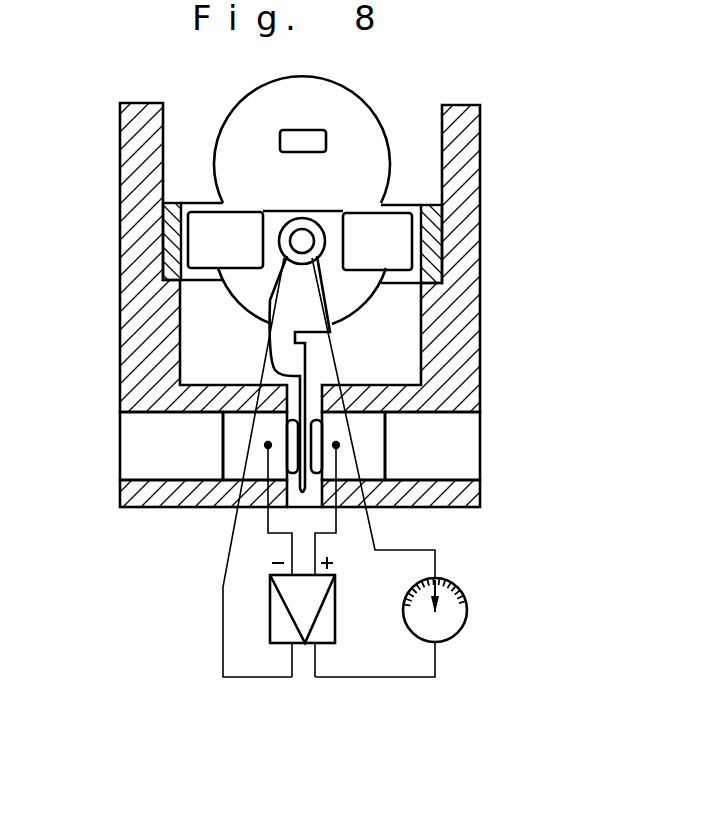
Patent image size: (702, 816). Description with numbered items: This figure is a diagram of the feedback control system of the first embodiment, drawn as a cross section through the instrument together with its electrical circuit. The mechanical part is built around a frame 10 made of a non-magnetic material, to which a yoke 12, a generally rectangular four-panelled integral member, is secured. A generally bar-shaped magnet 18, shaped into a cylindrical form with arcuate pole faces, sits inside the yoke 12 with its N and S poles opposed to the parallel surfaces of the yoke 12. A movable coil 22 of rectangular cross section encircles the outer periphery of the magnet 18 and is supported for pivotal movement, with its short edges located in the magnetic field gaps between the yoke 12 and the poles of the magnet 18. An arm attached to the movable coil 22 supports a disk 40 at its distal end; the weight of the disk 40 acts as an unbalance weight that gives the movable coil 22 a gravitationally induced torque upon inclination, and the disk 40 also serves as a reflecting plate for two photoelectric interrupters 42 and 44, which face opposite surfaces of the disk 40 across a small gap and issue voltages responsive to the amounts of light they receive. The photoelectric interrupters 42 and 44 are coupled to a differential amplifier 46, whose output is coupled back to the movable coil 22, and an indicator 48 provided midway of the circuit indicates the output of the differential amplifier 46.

The frame 10 is at (460, 105).
The yoke 12 is at (172, 203).
The magnet 18 is at (345, 185).
The movable coil 22 is at (237, 227).
The disk 40 is at (297, 507).
The photoelectric interrupter 42 is at (230, 442).
The photoelectric interrupter 44 is at (373, 460).
The differential amplifier 46 is at (332, 633).
The indicator 48 is at (448, 612).